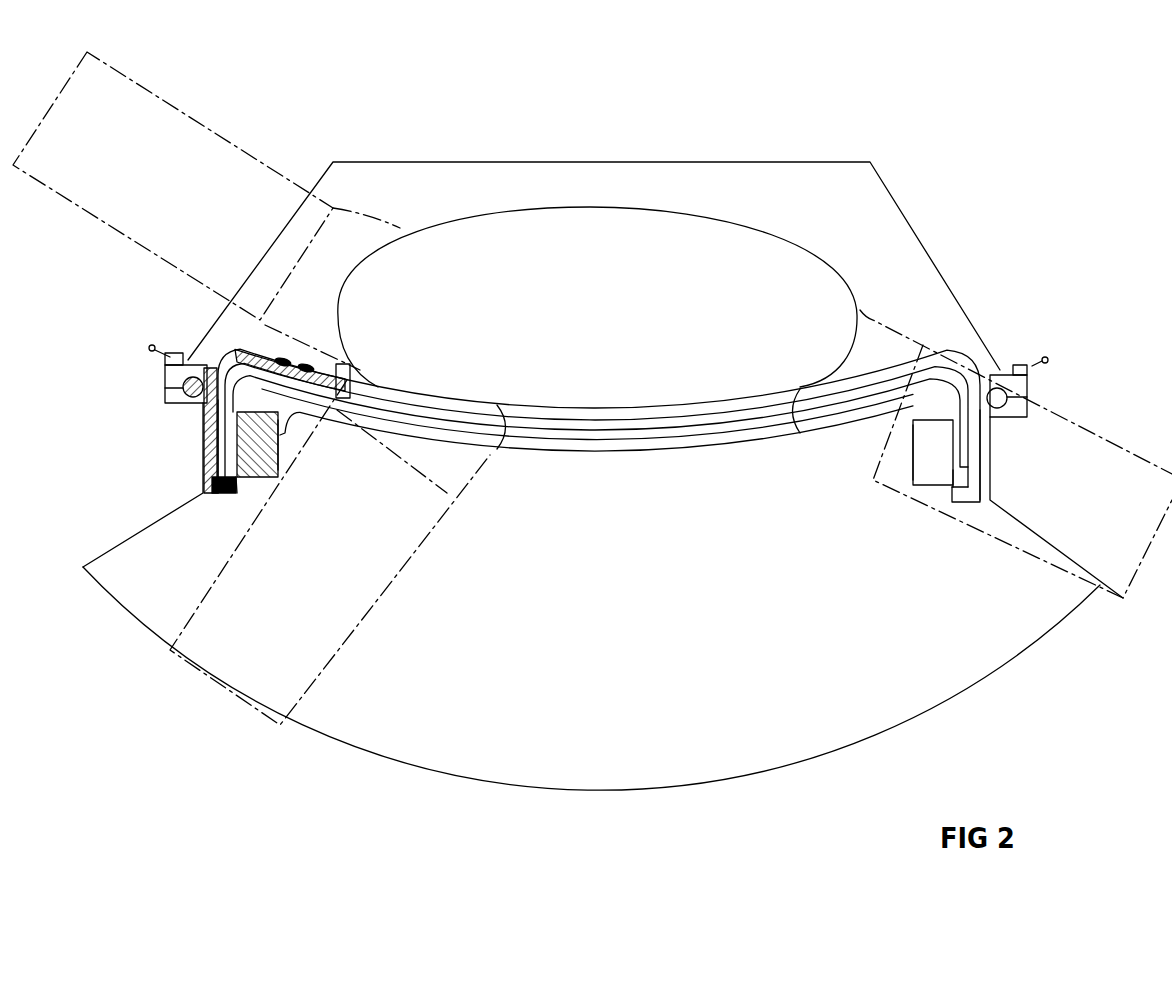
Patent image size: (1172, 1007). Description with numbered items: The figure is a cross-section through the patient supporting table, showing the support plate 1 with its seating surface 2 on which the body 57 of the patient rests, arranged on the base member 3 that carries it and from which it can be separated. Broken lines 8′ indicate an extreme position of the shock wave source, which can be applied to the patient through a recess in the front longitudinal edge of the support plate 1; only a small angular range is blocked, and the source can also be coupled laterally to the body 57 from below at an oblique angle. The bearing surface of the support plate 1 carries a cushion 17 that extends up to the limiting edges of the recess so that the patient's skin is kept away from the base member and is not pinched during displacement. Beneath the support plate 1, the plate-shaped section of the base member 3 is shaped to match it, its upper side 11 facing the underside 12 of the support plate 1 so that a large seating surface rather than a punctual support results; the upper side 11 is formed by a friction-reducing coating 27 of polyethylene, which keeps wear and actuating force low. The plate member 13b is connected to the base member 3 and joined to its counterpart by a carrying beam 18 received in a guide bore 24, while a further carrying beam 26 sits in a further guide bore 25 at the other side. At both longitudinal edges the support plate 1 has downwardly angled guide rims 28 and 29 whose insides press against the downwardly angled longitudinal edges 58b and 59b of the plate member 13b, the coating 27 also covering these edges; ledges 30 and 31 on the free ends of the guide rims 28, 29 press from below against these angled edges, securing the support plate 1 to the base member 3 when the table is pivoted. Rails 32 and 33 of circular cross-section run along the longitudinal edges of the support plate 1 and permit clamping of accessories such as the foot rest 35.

The support plate 1 is at (282, 372).
The seating surface 2 is at (695, 405).
The base member 3 is at (1032, 645).
The broken lines (extreme position of shock wave source) 8′ is at (200, 122).
The upper side of the plate-shaped section 11 is at (588, 431).
The underside of the support plate 12 is at (640, 432).
The plate member 13b is at (553, 448).
The cushion 17 is at (303, 378).
The carrying beam 18 is at (278, 437).
The guide bore 24 is at (277, 470).
The further guide bore 25 is at (925, 470).
The further carrying beam 26 is at (913, 453).
The friction-reducing coating 27 is at (205, 450).
The guide rim 28 is at (978, 455).
The guide rim 29 is at (203, 425).
The ledge 30 is at (960, 503).
The ledge 31 is at (222, 494).
The rail 32 is at (997, 387).
The rail 33 is at (190, 373).
The foot rest 35 is at (888, 213).
The body of the patient 57 is at (770, 250).
The longitudinal edge of plate member 58b is at (950, 477).
The longitudinal edge of plate member 59b is at (238, 468).